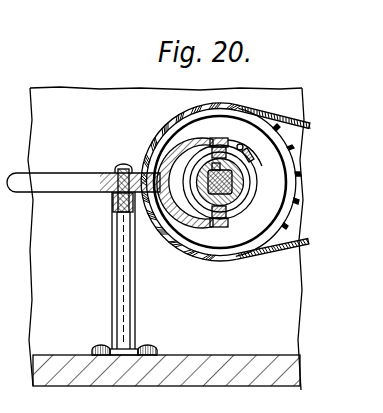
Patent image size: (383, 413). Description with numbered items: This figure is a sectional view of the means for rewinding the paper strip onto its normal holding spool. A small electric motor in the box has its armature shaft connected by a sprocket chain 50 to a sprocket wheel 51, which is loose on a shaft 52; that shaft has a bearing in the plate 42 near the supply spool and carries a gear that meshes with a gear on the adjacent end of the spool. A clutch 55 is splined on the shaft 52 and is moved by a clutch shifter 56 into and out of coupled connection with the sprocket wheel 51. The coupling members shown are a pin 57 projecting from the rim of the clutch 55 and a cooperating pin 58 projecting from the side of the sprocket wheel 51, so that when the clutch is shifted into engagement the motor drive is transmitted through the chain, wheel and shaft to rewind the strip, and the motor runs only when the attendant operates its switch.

The plate 42 is at (62, 343).
The sprocket chain 50 is at (292, 245).
The sprocket wheel 51 is at (200, 238).
The shaft 52 is at (180, 222).
The clutch 55 is at (228, 200).
The clutch shifter 56 is at (88, 173).
The pin 57 is at (254, 159).
The pin 58 is at (262, 133).